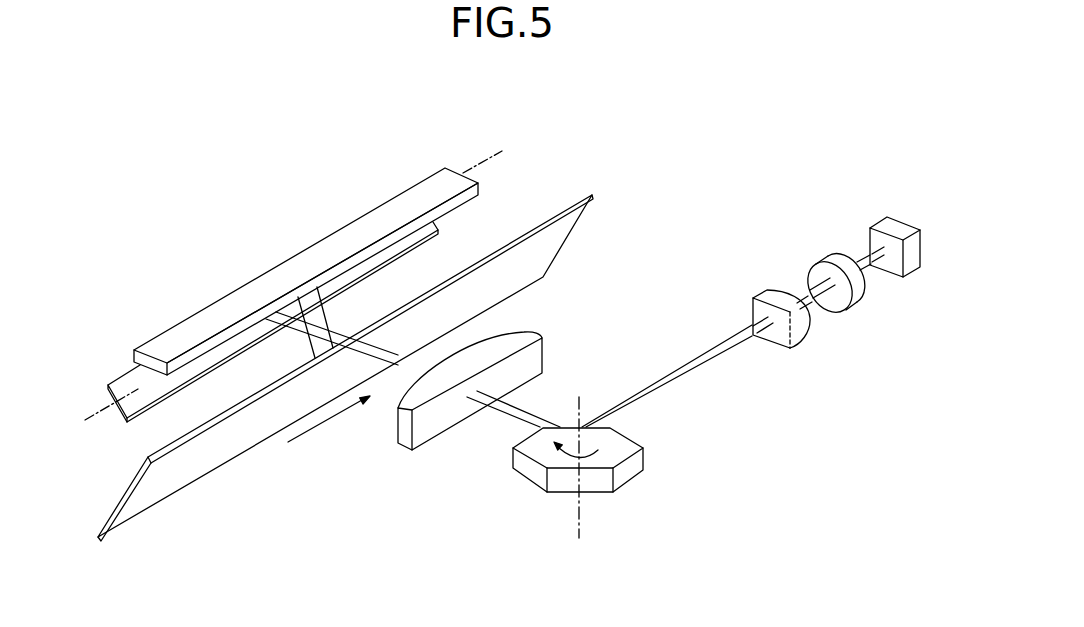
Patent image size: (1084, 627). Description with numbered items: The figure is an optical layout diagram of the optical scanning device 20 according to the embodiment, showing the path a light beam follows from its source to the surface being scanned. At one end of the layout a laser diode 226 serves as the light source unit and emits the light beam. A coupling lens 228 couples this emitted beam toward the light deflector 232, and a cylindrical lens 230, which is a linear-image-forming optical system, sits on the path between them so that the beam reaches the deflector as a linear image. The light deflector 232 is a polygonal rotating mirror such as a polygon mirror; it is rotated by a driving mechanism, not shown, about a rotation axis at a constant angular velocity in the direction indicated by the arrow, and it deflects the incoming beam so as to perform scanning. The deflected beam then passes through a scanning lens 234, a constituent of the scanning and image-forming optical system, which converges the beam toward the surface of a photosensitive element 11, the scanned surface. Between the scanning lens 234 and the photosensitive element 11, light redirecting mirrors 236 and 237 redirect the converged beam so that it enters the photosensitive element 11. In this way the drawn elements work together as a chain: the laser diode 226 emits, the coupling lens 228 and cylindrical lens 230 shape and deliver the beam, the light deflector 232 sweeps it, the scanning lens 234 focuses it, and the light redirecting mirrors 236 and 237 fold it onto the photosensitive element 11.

The optical scanning device 20 is at (724, 166).
The photosensitive element 11 is at (567, 238).
The laser diode 226 is at (903, 222).
The coupling lens 228 is at (867, 291).
The cylindrical lens 230 is at (812, 334).
The light deflector 232 is at (644, 449).
The scanning lens 234 is at (396, 435).
The light redirecting mirror 236 is at (439, 226).
The light redirecting mirror 237 is at (395, 197).